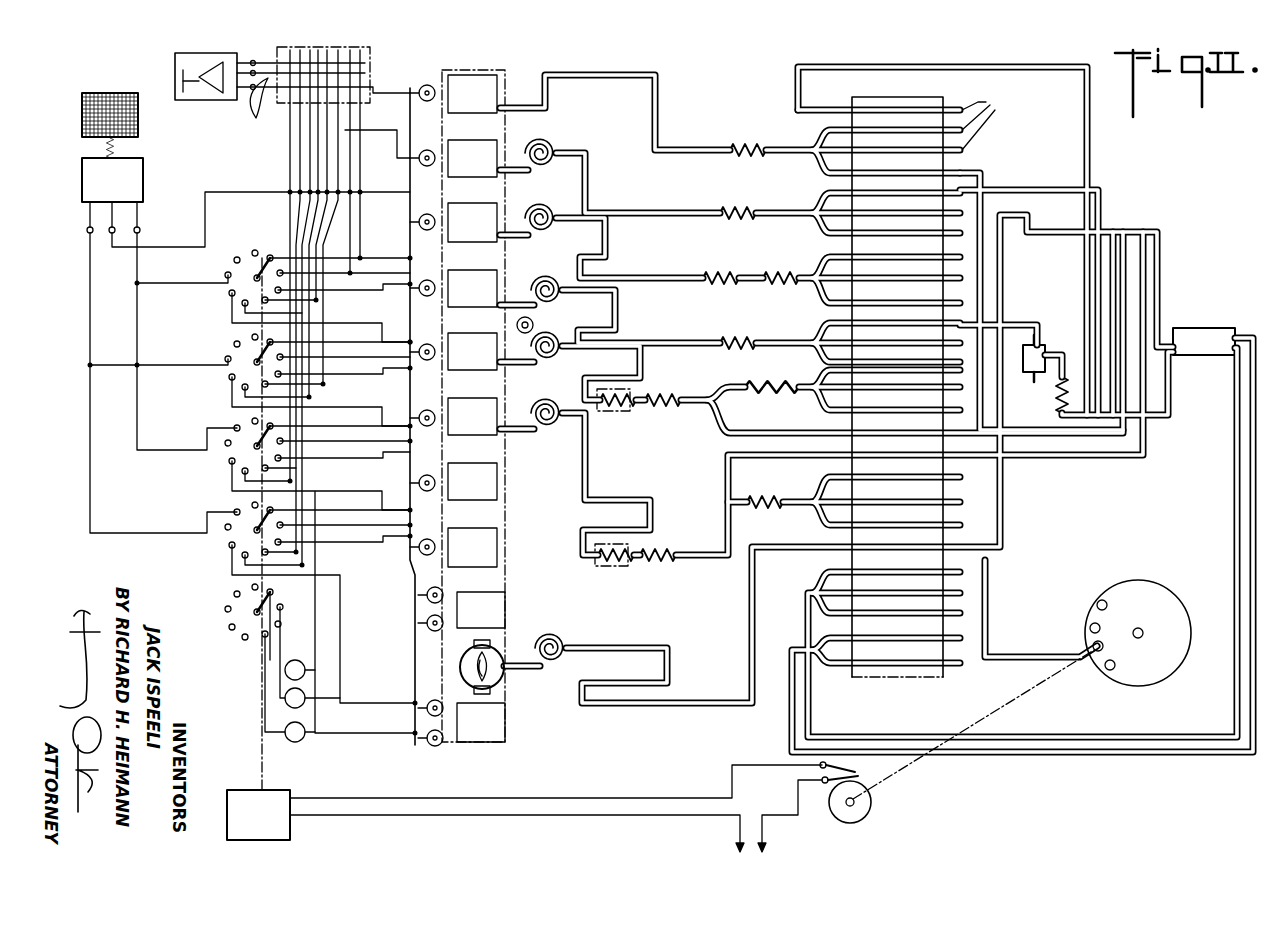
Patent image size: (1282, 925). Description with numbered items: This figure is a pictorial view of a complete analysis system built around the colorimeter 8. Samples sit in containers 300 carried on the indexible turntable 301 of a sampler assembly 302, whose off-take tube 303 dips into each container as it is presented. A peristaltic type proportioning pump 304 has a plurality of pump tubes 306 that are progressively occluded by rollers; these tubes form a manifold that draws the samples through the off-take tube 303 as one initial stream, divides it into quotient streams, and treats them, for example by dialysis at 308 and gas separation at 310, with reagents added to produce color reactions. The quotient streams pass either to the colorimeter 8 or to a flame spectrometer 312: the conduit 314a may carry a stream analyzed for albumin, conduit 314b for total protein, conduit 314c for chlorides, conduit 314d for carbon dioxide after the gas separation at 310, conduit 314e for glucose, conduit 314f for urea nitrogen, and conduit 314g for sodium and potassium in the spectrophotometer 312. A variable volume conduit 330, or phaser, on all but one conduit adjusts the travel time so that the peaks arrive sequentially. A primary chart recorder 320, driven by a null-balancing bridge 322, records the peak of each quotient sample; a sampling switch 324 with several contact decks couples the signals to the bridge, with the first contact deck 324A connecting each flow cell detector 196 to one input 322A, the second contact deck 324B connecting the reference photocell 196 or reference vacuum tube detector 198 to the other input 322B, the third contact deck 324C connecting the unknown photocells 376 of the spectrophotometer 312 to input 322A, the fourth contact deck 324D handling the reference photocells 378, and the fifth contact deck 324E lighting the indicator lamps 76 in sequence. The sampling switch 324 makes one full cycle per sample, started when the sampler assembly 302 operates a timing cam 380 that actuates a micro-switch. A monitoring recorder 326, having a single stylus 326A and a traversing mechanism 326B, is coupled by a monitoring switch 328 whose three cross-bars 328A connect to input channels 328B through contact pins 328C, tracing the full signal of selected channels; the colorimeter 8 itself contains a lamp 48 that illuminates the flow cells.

The colorimeter 8 is at (533, 55).
The lamp 48 is at (535, 320).
The indicator lamps 76 is at (297, 737).
The detector 196 is at (426, 102).
The reference flow cell assembly vacuum tube detector 198 is at (430, 539).
The containers 300 is at (1103, 600).
The indexible turntable 301 is at (1210, 600).
The sampler assembly 302 is at (1180, 567).
The off-take tube 303 is at (1077, 653).
The peristaltic type proportioning pump 304 is at (908, 92).
The pump tubes 306 is at (987, 117).
The dialysis 308 is at (1223, 330).
The gas separation 310 is at (1040, 340).
The flame spectrometer 312 is at (498, 648).
The conduit 314a is at (618, 83).
The conduit 314b is at (590, 186).
The conduit 314c is at (605, 243).
The conduit 314d is at (620, 305).
The conduit 314e is at (645, 384).
The conduit 314f is at (663, 490).
The conduit 314g is at (673, 632).
The primary chart recorder 320 is at (84, 94).
The null-balancing bridge 322 is at (82, 171).
The input 322A is at (137, 216).
The input 322B is at (92, 212).
The sampling switch 324 is at (258, 253).
The first contact deck 324A is at (232, 263).
The second contact deck 324B is at (226, 348).
The third contact deck 324C is at (236, 416).
The fourth contact deck 324D is at (236, 503).
The fifth contact deck 324E is at (238, 588).
The monitoring recorder 326 is at (186, 100).
The stylus 326A is at (178, 74).
The traversing mechanism 326B is at (218, 103).
The monitoring switch 328 is at (373, 48).
The cross-bars 328A is at (247, 111).
The input channels 328B is at (330, 130).
The contact pins 328C is at (370, 67).
The variable volume conduit 330 is at (557, 147).
The unknown photocells 376 is at (435, 587).
The reference photocells 378 is at (435, 631).
The timing cam 380 is at (865, 810).